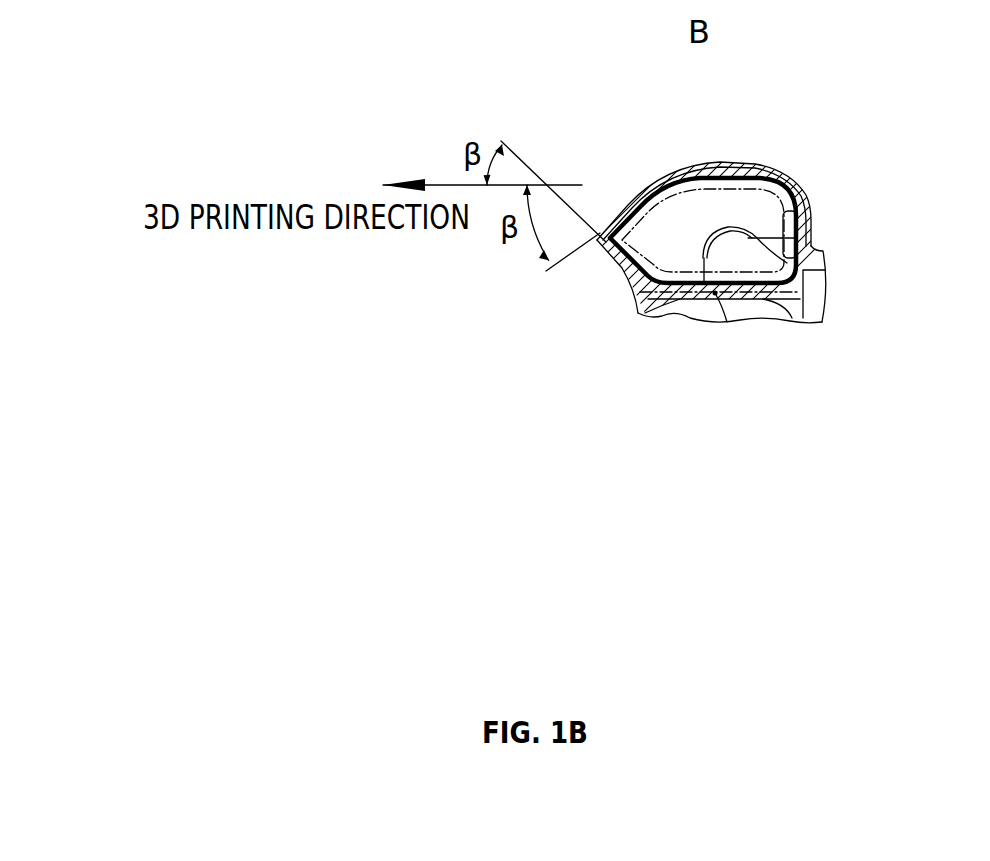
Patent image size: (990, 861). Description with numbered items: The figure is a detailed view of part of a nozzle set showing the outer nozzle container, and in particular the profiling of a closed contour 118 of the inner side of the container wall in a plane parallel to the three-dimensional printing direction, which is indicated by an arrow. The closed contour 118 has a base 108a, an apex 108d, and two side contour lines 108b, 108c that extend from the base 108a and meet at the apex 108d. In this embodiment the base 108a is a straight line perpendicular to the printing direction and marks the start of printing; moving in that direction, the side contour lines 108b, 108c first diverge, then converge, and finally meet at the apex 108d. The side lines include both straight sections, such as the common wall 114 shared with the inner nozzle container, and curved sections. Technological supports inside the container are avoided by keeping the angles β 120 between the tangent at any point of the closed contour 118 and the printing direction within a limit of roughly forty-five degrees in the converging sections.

The angle β 120 is at (503, 143).
The closed contour 118 is at (668, 181).
The side contour line 108b is at (723, 163).
The base 108a is at (810, 231).
The side contour line 108c is at (806, 316).
The apex 108d is at (603, 237).
The common wall 114 is at (715, 293).